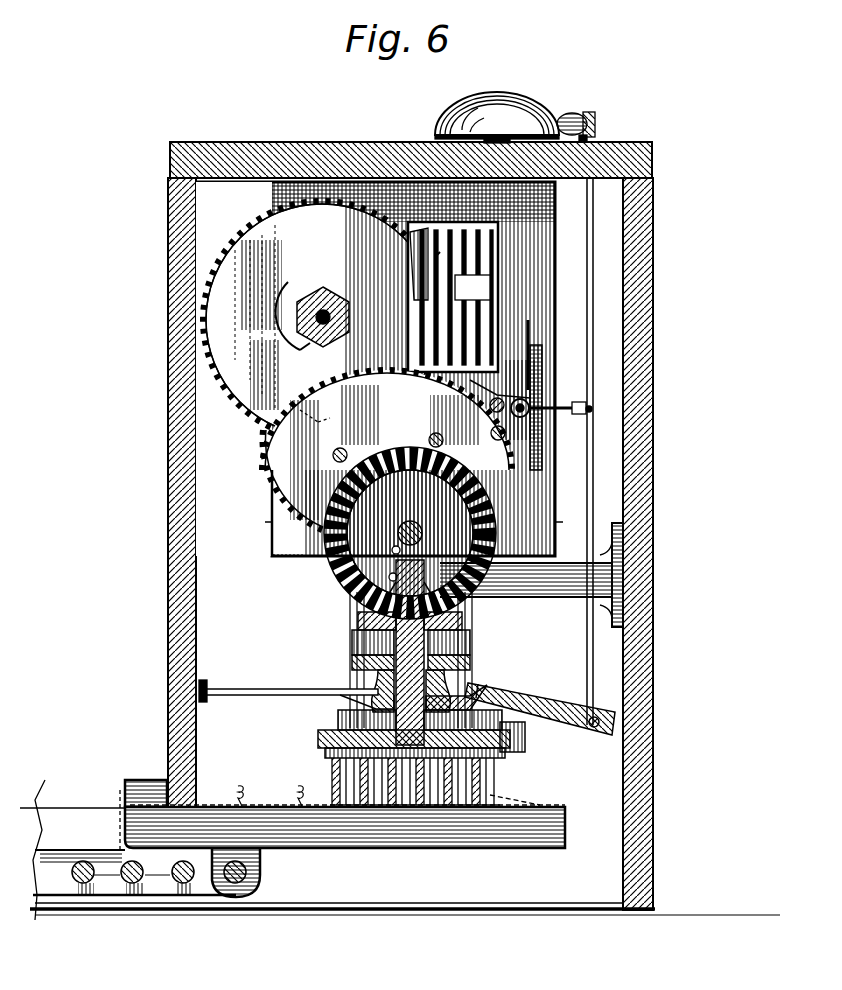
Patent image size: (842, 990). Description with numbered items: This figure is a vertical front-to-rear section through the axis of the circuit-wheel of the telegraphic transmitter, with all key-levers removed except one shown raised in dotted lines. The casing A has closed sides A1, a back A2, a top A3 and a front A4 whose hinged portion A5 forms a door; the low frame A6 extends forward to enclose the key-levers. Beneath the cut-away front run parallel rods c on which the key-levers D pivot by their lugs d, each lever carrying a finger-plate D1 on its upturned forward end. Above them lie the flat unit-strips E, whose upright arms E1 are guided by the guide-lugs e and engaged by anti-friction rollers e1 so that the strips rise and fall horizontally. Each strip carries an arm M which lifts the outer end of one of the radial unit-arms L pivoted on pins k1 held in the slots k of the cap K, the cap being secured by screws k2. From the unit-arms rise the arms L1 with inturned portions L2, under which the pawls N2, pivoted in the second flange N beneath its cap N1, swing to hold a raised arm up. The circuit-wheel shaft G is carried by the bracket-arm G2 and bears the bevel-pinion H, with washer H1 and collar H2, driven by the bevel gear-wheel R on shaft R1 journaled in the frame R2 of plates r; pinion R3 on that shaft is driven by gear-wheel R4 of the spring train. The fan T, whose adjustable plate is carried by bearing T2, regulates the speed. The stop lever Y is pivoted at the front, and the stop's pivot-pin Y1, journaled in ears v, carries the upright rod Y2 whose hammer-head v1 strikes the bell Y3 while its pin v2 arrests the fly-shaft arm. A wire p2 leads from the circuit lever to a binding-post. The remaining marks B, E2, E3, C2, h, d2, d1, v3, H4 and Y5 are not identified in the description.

The casing A is at (405, 525).
The closed sides A1 is at (329, 890).
The back A2 is at (648, 544).
The top A3 is at (411, 150).
The front A4 is at (183, 696).
The hinged portion A5 is at (142, 453).
The forwardly-extending low frame A6 is at (405, 853).
The bell Y3 is at (497, 86).
The knob or hammer-head v1 is at (574, 118).
The shaft R1 is at (324, 320).
The frame R2 is at (335, 295).
The pinion R3 is at (480, 265).
The anti-friction rollers e1 is at (470, 262).
The guide-lugs e is at (490, 288).
The ears or lugs v is at (528, 325).
The bevel gear-wheel R is at (387, 450).
The pin B is at (330, 462).
The plates or boards r is at (410, 522).
The bearing T2 is at (545, 448).
The fly or regulating fan T is at (502, 400).
The short shaft or pivot-pin Y1 is at (563, 400).
The upright rod Y2 is at (598, 451).
The pin v2 is at (592, 410).
The gear-wheel R4 is at (487, 433).
The gear E2 is at (385, 445).
The unit-strips E is at (410, 533).
The upwardly-extending arms E1 is at (422, 530).
The bracket-arm G2 is at (394, 550).
The shaft G is at (390, 577).
The rack bar C2 is at (531, 575).
The column h is at (410, 652).
The bevel-pinion H is at (470, 612).
The washer H1 is at (352, 600).
The rigid collar H2 is at (352, 640).
The cap N1 is at (440, 660).
The swinging hooks or pawls N2 is at (452, 676).
The second flange N is at (340, 680).
The inturned portions L2 is at (480, 690).
The screws k2 is at (338, 714).
The radial arms or bars L is at (538, 733).
The radial slots k is at (318, 740).
The cap K is at (512, 745).
The pins k1 is at (351, 738).
The arms L1 is at (330, 722).
The arm M is at (325, 756).
The fingers E3 is at (330, 778).
The wire p2 is at (264, 794).
The line d2 is at (347, 796).
The arm H4 is at (540, 709).
The arm Y5 is at (548, 708).
The pivot v3 is at (598, 718).
The lever Y is at (590, 740).
The key-levers D is at (292, 807).
The finger-plate D1 is at (146, 785).
The extension or lug d is at (154, 872).
The channel end d1 is at (70, 866).
The parallel rods c is at (90, 862).